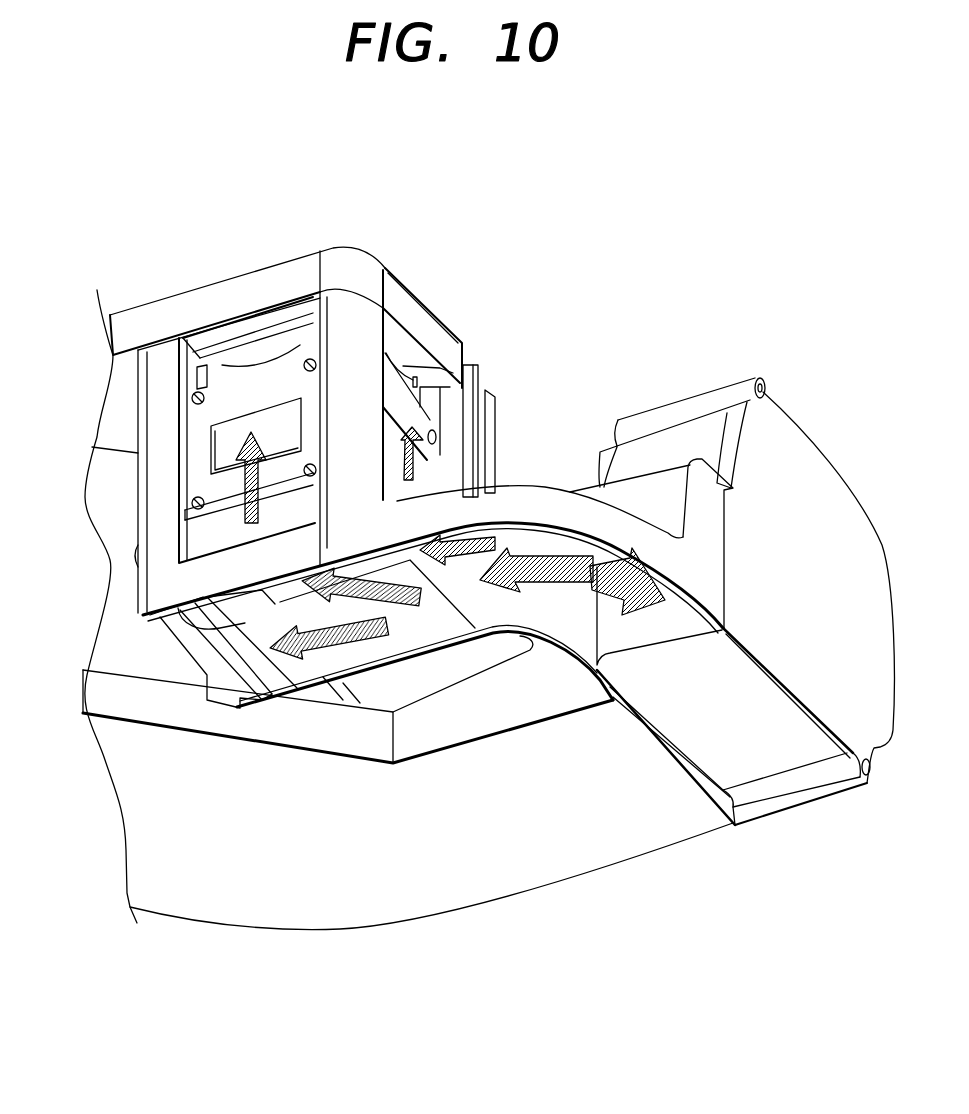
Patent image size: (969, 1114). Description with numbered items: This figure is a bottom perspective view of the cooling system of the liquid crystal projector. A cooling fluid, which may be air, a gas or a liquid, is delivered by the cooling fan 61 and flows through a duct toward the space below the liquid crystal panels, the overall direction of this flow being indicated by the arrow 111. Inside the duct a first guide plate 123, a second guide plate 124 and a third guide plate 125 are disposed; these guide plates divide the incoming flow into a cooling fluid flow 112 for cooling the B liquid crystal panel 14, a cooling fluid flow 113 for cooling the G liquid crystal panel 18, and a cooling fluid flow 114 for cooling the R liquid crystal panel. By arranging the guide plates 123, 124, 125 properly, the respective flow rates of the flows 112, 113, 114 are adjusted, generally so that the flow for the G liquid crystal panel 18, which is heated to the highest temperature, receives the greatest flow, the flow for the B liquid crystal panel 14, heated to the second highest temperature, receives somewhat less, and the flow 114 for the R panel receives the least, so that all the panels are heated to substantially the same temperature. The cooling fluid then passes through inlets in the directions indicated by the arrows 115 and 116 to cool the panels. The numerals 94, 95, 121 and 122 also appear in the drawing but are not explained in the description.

The B liquid crystal panel 14 is at (397, 403).
The G liquid crystal panel 18 is at (257, 385).
The cooling fan 61 is at (840, 495).
The guide surface 94 is at (397, 342).
The opening 95 is at (213, 338).
The arrow 111 is at (553, 557).
The cooling fluid flow 112 is at (485, 537).
The cooling fluid flow 113 is at (348, 605).
The cooling fluid flow 114 is at (346, 640).
The arrow 115 is at (413, 425).
The arrow 116 is at (243, 447).
The discharge tray 121 is at (663, 625).
The front wall 122 is at (513, 607).
The first guide plate 123 is at (423, 618).
The second guide plate 124 is at (263, 673).
The third guide plate 125 is at (245, 595).